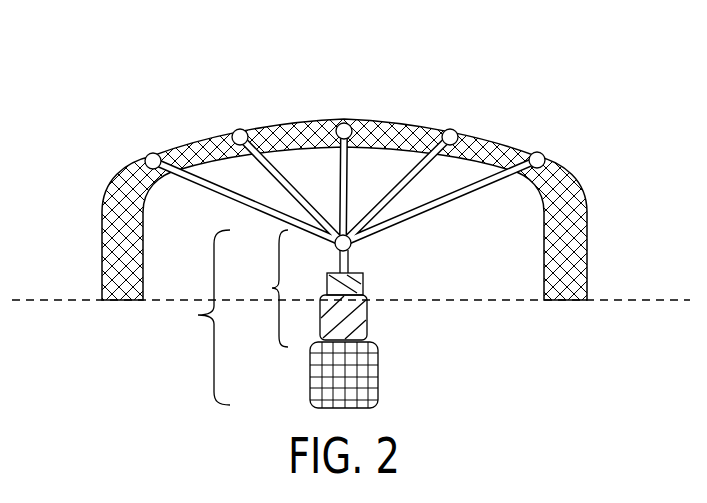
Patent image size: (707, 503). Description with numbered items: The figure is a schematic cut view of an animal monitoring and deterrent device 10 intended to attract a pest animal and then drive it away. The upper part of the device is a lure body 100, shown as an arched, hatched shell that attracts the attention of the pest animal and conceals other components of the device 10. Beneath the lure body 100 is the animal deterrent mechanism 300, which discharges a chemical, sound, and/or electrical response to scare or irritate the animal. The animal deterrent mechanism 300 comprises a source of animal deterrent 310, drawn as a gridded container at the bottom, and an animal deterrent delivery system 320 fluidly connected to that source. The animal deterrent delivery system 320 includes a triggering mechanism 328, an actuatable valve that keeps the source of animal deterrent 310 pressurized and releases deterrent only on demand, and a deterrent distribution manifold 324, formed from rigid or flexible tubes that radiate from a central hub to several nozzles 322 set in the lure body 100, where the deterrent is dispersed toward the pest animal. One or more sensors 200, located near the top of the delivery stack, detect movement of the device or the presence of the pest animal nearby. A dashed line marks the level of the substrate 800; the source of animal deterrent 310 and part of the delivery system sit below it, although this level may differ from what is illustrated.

The animal monitoring and deterrent device 10 is at (510, 103).
The lure body 100 is at (117, 207).
The sensors 200 is at (360, 281).
The animal deterrent mechanism 300 is at (320, 327).
The source of animal deterrent 310 is at (367, 383).
The animal deterrent delivery system 320 is at (270, 288).
The nozzles 322 is at (230, 133).
The deterrent distribution manifold 324 is at (244, 200).
The triggering mechanism 328 is at (353, 323).
The substrate 800 is at (604, 300).